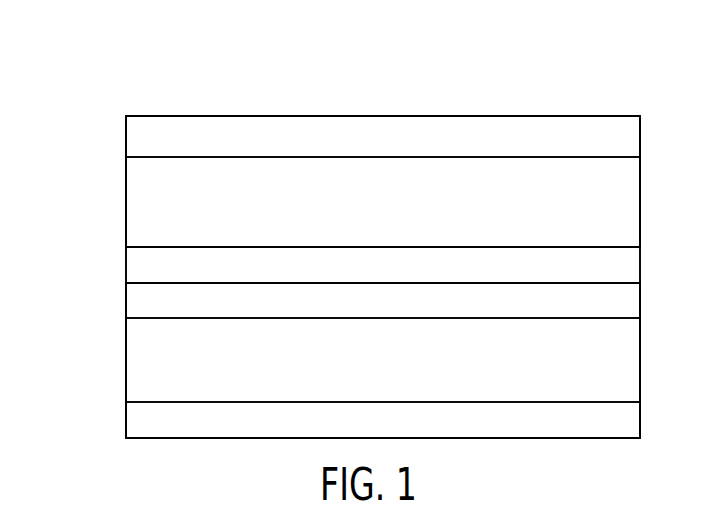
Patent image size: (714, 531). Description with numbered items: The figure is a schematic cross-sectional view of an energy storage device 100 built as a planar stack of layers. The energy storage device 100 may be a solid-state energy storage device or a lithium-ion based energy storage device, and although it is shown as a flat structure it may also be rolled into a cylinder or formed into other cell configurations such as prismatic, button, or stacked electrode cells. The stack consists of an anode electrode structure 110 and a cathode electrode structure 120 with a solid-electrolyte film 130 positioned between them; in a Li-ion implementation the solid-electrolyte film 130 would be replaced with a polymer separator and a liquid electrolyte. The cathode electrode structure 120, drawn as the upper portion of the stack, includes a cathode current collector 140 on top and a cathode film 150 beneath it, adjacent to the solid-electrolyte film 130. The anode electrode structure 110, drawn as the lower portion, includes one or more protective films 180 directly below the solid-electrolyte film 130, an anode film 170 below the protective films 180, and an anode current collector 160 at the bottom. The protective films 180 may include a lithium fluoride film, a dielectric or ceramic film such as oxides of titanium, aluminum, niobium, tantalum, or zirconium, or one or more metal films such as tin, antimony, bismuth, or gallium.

The energy storage device 100 is at (152, 63).
The anode electrode structure 110 is at (105, 283).
The cathode electrode structure 120 is at (105, 117).
The solid-electrolyte film 130 is at (407, 278).
The cathode current collector 140 is at (407, 147).
The cathode film 150 is at (407, 212).
The anode current collector 160 is at (407, 430).
The anode film 170 is at (407, 373).
The protective film 180 is at (407, 311).